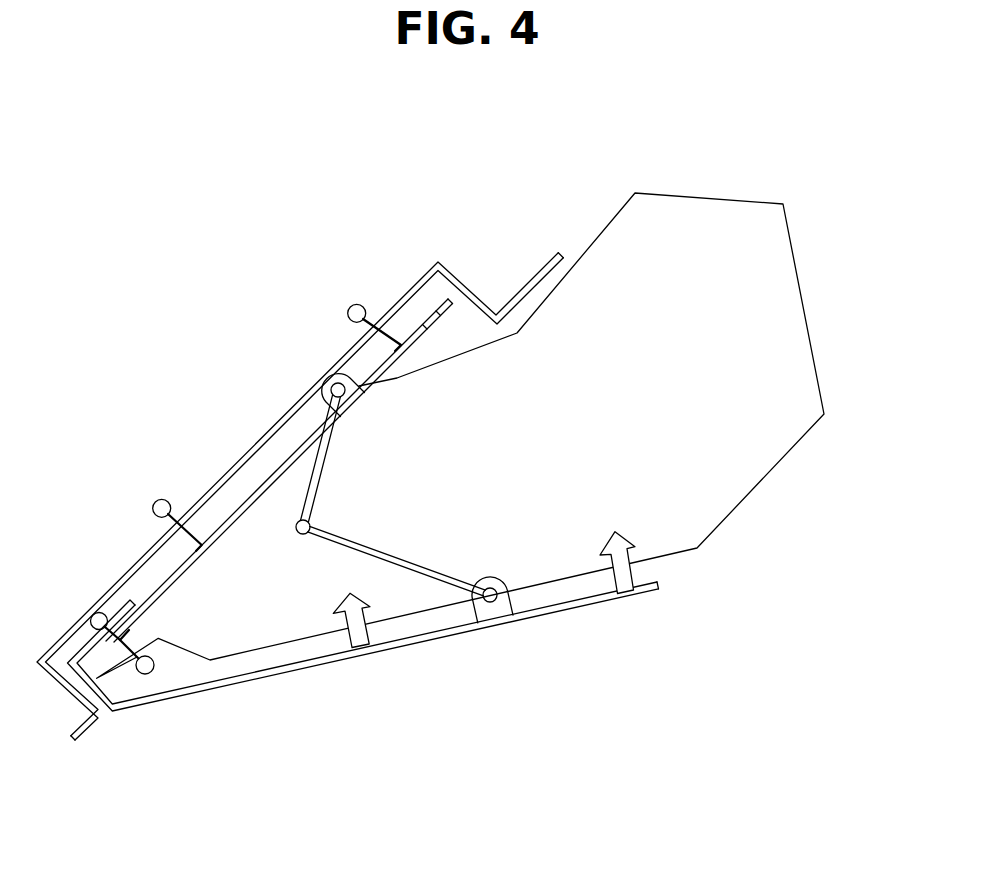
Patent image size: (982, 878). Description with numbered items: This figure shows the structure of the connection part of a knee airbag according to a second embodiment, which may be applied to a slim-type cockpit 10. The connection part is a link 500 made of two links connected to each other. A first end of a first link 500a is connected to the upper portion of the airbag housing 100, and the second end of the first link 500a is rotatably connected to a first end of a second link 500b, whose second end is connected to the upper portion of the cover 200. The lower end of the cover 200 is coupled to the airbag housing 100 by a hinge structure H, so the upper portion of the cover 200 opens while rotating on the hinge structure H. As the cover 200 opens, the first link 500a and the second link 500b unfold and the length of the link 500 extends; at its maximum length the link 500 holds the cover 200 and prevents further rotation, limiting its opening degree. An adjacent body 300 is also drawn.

The slim-type cockpit 10 is at (437, 258).
The airbag housing 100 is at (277, 478).
The cover 200 is at (457, 636).
The body block 300 is at (740, 475).
The link 500 is at (403, 795).
The first link 500a is at (307, 503).
The second link 500b is at (403, 567).
The hinge structure H is at (114, 730).